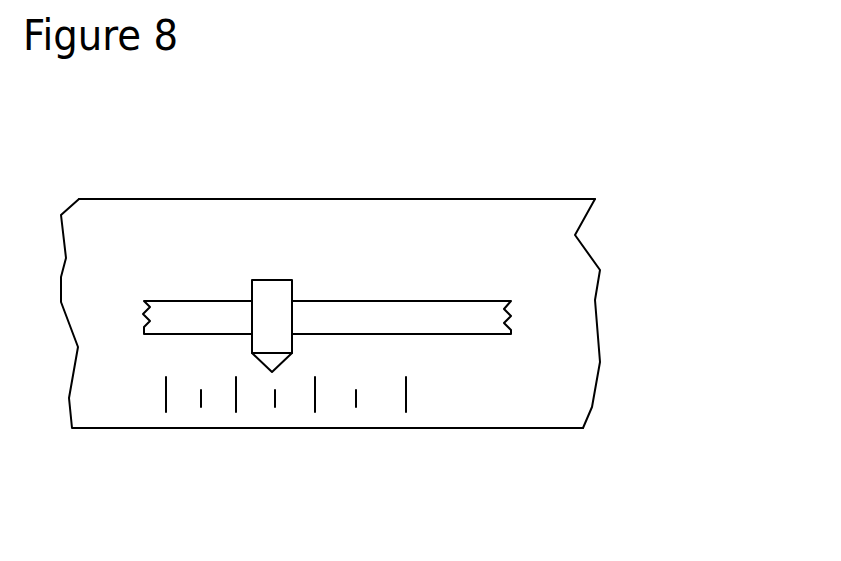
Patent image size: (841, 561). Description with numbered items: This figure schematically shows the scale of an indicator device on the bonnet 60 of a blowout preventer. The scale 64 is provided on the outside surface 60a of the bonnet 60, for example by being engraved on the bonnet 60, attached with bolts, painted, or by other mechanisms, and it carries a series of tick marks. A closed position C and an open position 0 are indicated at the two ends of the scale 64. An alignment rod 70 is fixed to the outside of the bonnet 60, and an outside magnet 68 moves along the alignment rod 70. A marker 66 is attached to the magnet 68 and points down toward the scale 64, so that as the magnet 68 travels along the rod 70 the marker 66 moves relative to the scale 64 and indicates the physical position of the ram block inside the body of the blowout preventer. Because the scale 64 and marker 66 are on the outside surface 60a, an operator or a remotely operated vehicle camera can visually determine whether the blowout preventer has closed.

The bonnet 60 is at (579, 187).
The outside surface 60a is at (567, 315).
The scale 64 is at (224, 408).
The marker 66 is at (277, 360).
The outside magnet 68 is at (270, 287).
The alignment rod 70 is at (406, 320).
The open position 0 is at (166, 398).
The closed position C is at (407, 397).